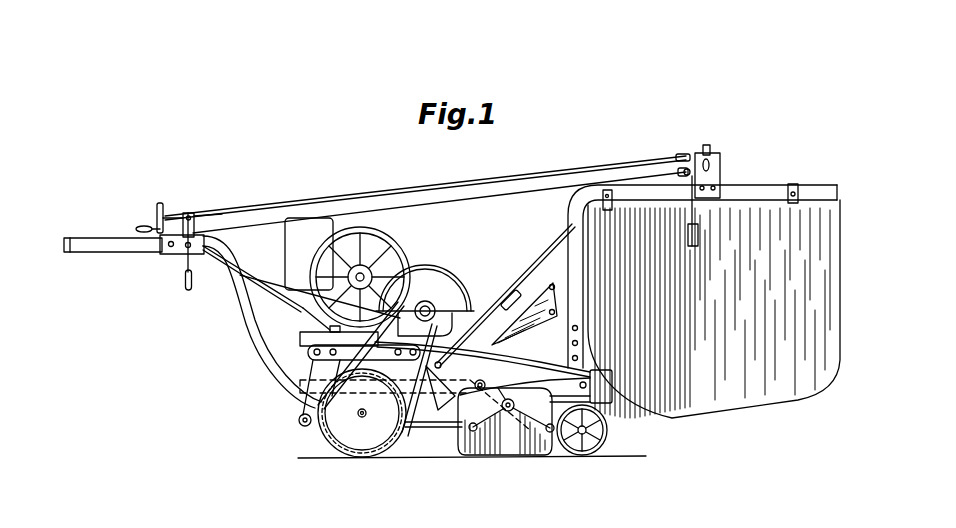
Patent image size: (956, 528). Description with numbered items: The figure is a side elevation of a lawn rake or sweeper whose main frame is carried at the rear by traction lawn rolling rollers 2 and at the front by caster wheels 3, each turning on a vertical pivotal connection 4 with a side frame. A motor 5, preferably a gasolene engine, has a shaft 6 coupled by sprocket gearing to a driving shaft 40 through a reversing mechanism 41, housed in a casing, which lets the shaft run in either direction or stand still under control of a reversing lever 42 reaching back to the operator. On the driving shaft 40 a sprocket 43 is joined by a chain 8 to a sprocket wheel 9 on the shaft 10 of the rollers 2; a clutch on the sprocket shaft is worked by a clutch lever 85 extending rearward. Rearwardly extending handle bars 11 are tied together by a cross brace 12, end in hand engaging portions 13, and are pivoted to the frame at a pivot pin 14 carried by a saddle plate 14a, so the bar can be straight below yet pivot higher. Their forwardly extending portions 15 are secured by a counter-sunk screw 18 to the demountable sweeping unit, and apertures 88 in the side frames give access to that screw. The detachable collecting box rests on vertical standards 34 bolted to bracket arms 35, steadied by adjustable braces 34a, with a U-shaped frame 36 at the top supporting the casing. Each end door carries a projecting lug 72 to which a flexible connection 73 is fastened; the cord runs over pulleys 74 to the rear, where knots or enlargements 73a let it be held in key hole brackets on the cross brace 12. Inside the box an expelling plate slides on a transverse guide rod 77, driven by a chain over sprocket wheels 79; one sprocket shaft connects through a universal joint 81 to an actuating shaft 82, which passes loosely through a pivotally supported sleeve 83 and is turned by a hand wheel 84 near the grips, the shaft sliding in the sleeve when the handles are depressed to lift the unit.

The traction lawn rolling rollers 2 is at (338, 450).
The caster wheels 3 is at (607, 438).
The pivotal connection 4 is at (612, 390).
The motor 5 is at (331, 282).
The shaft of the engine 6 is at (372, 270).
The chain 8 is at (412, 440).
The sprocket wheel 9 is at (366, 437).
The shaft of the traction rollers 10 is at (358, 416).
The handle bars 11 is at (250, 325).
The cross brace 12 is at (185, 254).
The hand engaging portions 13 is at (86, 243).
The pivot pin 14 is at (332, 372).
The saddle plate 14a is at (413, 430).
The forwardly extending portions of the handle bars 15 is at (462, 367).
The counter-sunk screw 18 is at (477, 383).
The vertical standards 34 is at (568, 278).
The adjustable braces 34a is at (534, 266).
The bracket arms 35 is at (579, 346).
The U-shaped frame 36 is at (750, 192).
The driving shaft 40 is at (437, 302).
The reversing mechanism 41 is at (427, 283).
The reversing lever 42 is at (258, 282).
The sprocket 43 is at (445, 309).
The projecting lug 72 is at (698, 234).
The flexible connection 73 is at (518, 194).
The knots or enlargements 73a is at (223, 230).
The pulleys 74 is at (683, 170).
The guide rod 77 is at (768, 380).
The sprocket wheels 79 is at (708, 150).
The universal joint 81 is at (690, 156).
The actuating shaft 82 is at (218, 212).
The sleeve 83 is at (189, 212).
The hand wheel 84 is at (160, 204).
The clutch lever 85 is at (283, 292).
The apertures 88 is at (484, 384).